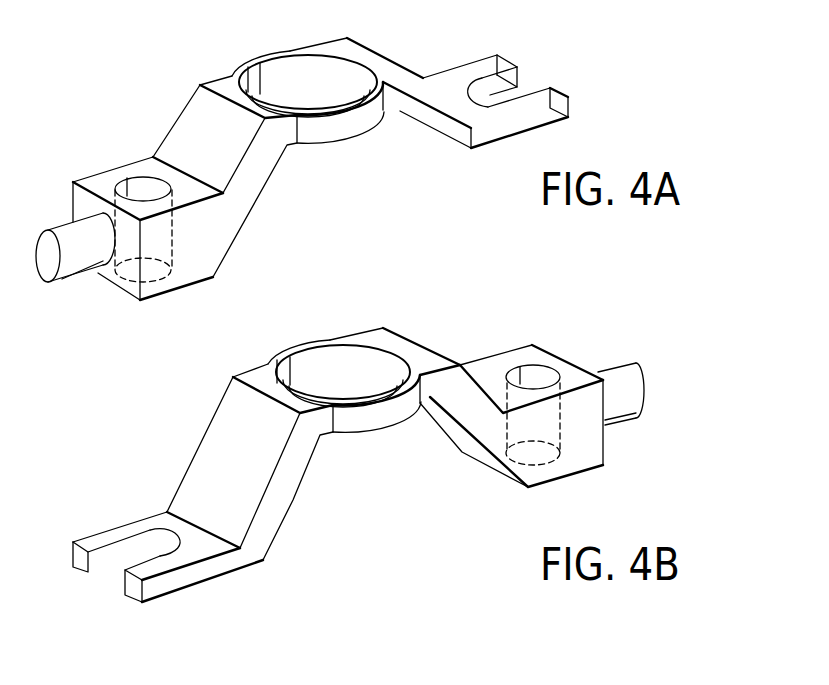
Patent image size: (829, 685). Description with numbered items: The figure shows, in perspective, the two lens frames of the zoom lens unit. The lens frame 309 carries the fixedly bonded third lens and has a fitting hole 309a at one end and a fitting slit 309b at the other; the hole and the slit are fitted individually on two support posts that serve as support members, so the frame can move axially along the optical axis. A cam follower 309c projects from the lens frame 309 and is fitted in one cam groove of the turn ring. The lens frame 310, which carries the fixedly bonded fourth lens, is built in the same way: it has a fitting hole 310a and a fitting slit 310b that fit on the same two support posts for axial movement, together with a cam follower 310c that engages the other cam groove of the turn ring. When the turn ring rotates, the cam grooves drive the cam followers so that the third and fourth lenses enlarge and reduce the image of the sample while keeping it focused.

In FIG. 4A, the lens frame 309 is at (170, 93).
In FIG. 4A, the fitting hole 309a is at (138, 186).
In FIG. 4A, the fitting slit 309b is at (531, 82).
In FIG. 4A, the cam follower 309c is at (52, 273).
In FIG. 4B, the lens frame 310 is at (410, 477).
In FIG. 4B, the fitting hole 310a is at (538, 367).
In FIG. 4B, the fitting slit 310b is at (112, 573).
In FIG. 4B, the cam follower 310c is at (634, 402).